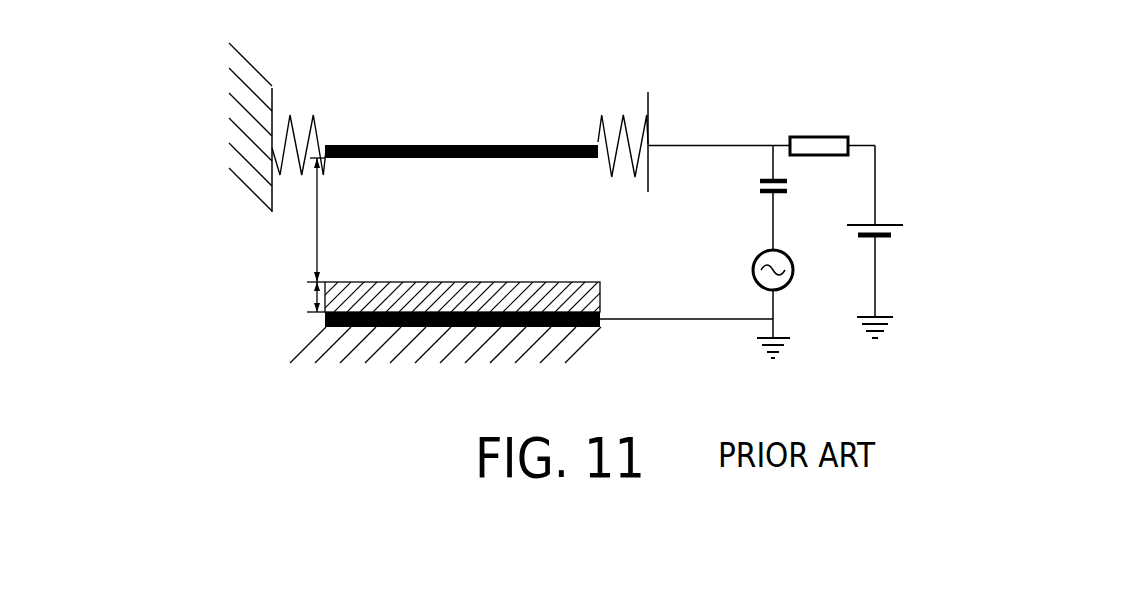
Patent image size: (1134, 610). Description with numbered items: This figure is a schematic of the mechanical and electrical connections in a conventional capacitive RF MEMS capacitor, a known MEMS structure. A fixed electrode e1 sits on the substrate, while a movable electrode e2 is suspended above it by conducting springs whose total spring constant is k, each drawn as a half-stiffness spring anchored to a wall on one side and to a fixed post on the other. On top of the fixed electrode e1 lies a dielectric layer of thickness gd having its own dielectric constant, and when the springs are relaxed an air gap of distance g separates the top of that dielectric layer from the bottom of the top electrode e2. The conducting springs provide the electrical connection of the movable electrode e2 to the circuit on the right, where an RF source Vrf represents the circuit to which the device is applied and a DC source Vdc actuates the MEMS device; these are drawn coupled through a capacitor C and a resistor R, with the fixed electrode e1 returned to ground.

The movable electrode e2 is at (461, 138).
The fixed electrode e1 is at (462, 333).
The air gap distance g is at (311, 220).
The dielectric layer thickness gd is at (303, 295).
The resistor R is at (819, 132).
The capacitor C is at (787, 189).
The RF source Vrf is at (789, 271).
The DC source Vdc is at (893, 243).